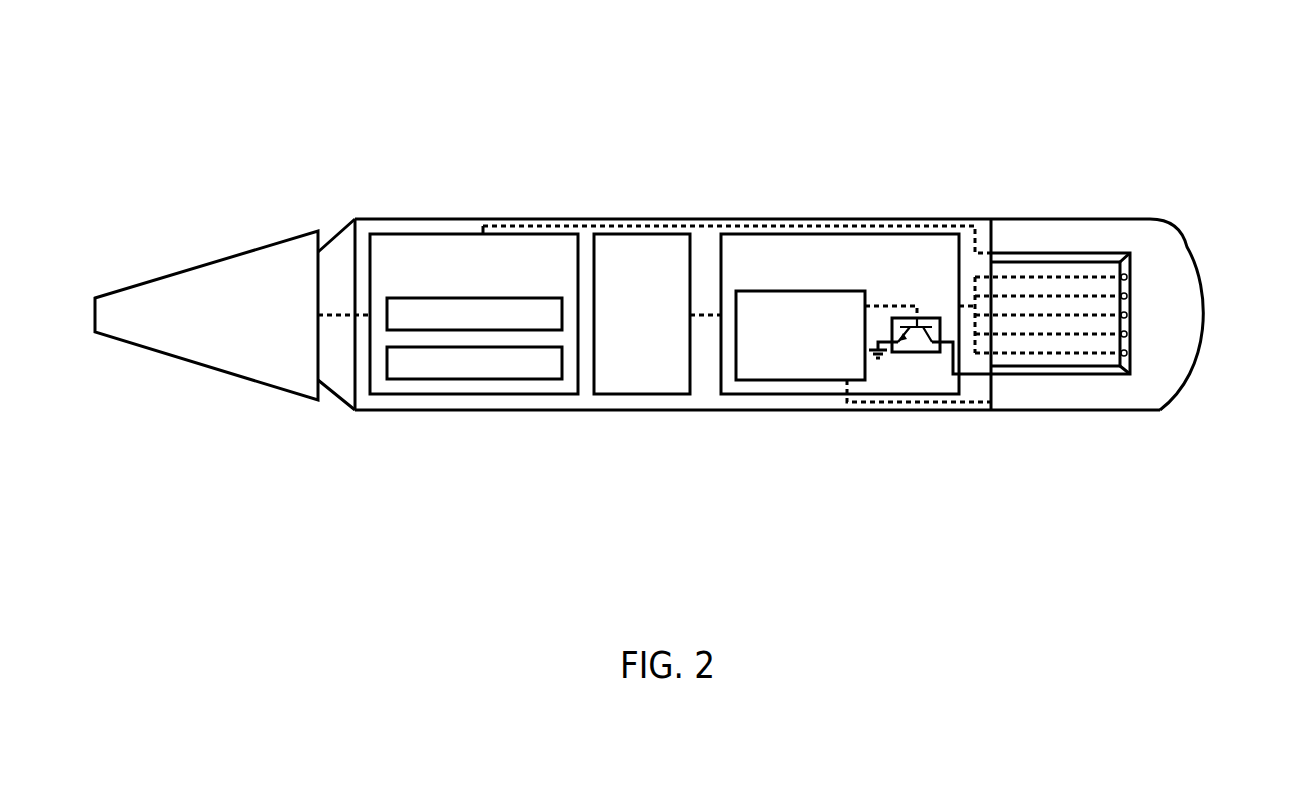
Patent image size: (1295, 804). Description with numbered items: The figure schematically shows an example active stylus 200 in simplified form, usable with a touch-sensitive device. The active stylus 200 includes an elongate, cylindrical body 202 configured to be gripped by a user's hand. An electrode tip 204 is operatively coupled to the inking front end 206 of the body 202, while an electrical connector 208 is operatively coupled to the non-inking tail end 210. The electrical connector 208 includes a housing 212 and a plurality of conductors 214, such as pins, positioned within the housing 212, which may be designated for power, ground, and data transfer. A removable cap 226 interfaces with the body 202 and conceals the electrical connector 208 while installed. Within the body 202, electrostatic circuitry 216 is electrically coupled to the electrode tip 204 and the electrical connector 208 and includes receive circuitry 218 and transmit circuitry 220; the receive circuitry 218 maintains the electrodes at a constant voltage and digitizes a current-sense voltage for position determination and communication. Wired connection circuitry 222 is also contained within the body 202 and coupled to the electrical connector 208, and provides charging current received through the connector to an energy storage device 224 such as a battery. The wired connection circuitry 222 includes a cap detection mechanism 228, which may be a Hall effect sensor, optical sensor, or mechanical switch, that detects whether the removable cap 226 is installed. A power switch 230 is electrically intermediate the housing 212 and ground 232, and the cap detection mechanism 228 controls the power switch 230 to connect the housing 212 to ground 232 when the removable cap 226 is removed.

The active stylus 200 is at (1137, 59).
The body 202 is at (512, 410).
The electrode tip 204 is at (232, 257).
The front end 206 is at (346, 155).
The electrical connector 208 is at (1118, 307).
The tail end 210 is at (1205, 284).
The housing 212 is at (1130, 366).
The plurality of conductors 214 is at (1146, 300).
The electrostatic circuitry 216 is at (538, 286).
The receive circuitry 218 is at (530, 326).
The transmit circuitry 220 is at (535, 374).
The wired connection circuitry 222 is at (902, 286).
The energy storage device 224 is at (654, 361).
The removable cap 226 is at (1187, 238).
The cap detection mechanism 228 is at (802, 380).
The power switch 230 is at (918, 352).
The ground 232 is at (878, 360).